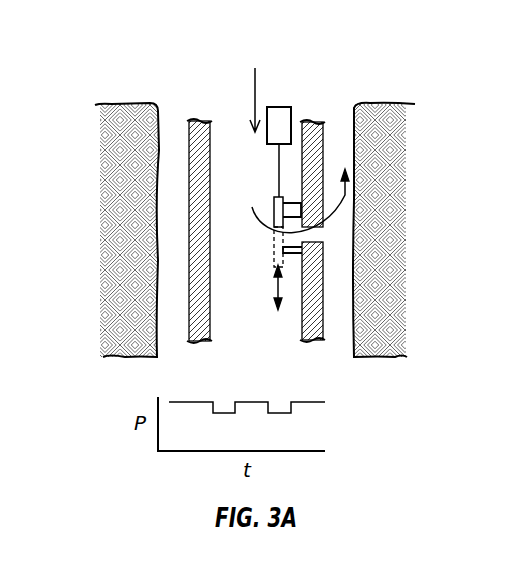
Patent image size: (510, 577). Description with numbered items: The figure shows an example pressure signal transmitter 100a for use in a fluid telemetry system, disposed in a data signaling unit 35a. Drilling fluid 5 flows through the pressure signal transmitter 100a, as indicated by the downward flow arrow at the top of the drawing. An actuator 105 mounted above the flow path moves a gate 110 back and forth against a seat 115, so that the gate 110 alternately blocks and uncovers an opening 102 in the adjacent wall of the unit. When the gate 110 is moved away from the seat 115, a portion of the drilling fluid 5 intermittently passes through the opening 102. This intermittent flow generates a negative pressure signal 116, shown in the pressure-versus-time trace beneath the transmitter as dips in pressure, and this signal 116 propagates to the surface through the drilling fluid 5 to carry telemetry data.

The pressure signal transmitter 100a is at (348, 46).
The drilling fluid 5 is at (255, 83).
The actuator 105 is at (291, 111).
The data signaling unit 35a is at (189, 148).
The gate 110 is at (285, 199).
The opening 102 is at (300, 234).
The seat 115 is at (305, 250).
The negative pressure signal 116 is at (275, 413).